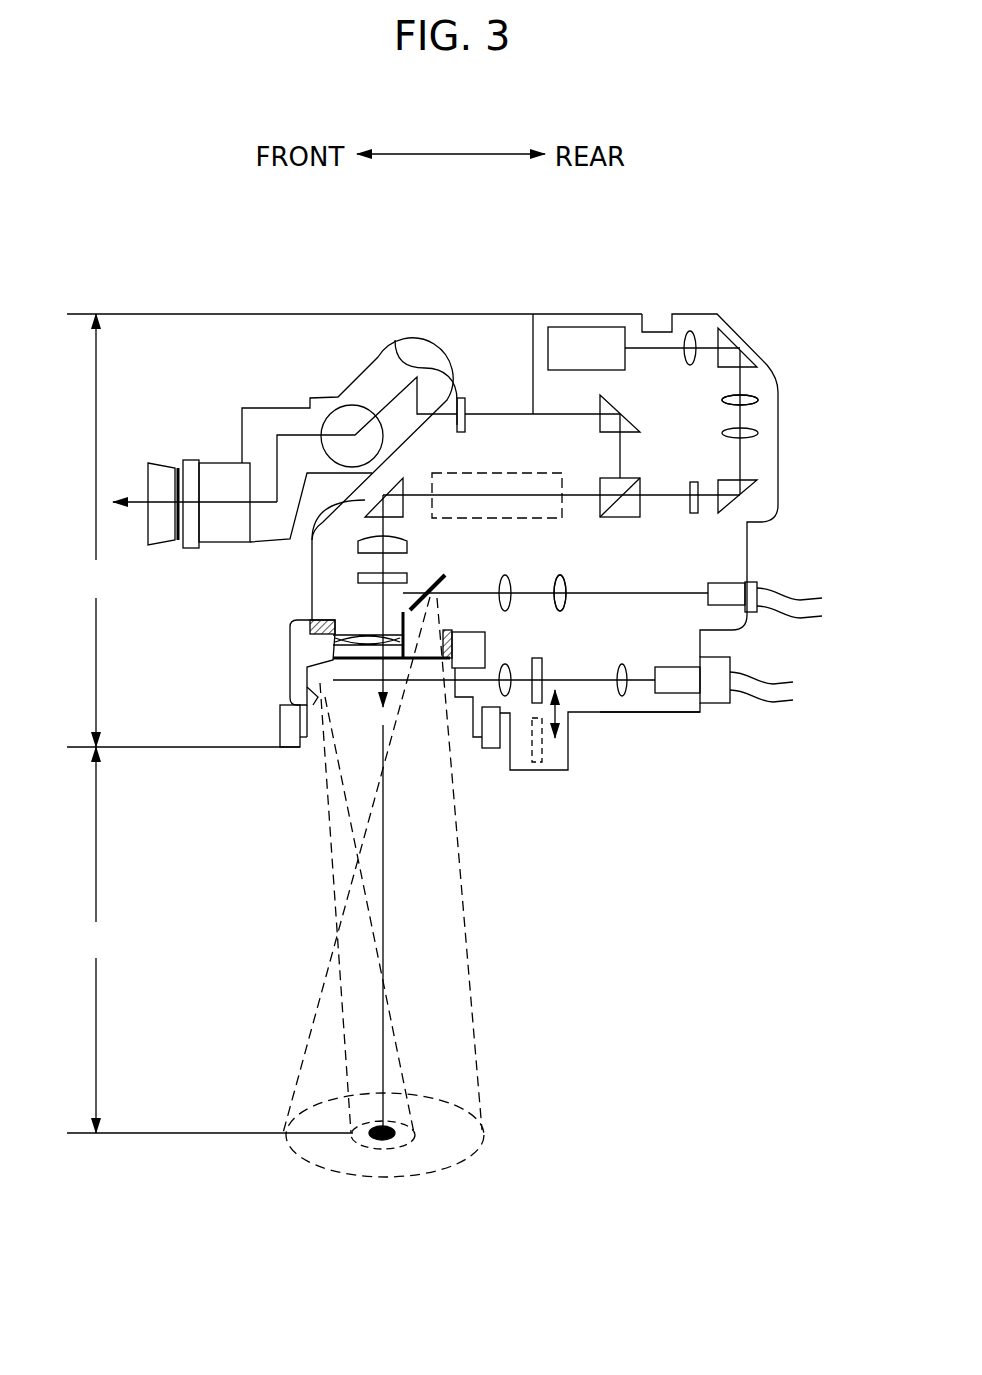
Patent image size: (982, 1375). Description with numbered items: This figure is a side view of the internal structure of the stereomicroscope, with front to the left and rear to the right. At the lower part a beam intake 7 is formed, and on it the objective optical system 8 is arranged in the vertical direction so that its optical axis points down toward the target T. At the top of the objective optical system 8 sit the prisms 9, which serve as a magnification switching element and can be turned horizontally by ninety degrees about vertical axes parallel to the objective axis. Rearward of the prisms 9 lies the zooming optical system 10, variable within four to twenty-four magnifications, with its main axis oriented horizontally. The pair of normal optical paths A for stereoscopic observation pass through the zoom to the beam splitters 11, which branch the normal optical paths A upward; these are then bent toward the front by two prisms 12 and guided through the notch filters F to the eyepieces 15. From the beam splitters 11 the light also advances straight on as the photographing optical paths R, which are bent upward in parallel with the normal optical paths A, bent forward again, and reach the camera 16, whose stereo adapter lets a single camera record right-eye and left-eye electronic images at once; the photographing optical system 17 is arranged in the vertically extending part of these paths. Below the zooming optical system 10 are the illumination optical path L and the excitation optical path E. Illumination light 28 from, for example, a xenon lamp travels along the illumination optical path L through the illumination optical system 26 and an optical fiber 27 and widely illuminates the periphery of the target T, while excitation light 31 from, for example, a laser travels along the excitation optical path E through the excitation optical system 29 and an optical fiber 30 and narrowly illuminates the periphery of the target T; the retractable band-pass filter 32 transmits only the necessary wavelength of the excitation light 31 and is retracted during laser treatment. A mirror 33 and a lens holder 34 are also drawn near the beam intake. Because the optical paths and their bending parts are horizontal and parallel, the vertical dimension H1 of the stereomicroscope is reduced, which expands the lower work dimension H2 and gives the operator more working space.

The beam intake 7 is at (356, 660).
The objective optical system 8 is at (358, 632).
The prisms 9 is at (358, 545).
The zooming optical system 10 is at (548, 472).
The beam splitters 11 is at (628, 479).
The prisms 12 is at (612, 401).
The eyepieces 15 is at (210, 460).
The camera 16 is at (595, 327).
The photographing optical system 17 is at (790, 522).
The illumination optical system 26 is at (470, 562).
The optical fiber 27 is at (777, 584).
The illumination light 28 is at (462, 918).
The excitation optical system 29 is at (497, 647).
The optical fiber 30 is at (756, 677).
The excitation light 31 is at (335, 888).
The band-pass filter 32 is at (545, 673).
The mirror 33 is at (433, 578).
The lens holder 34 is at (293, 703).
The normal optical paths A is at (533, 378).
The notch filters F is at (395, 338).
The photographing optical paths R is at (737, 413).
The illumination optical path L is at (628, 562).
The excitation optical path E is at (645, 713).
The target T is at (392, 1140).
The vertical dimension H1 is at (354, 530).
The lower work dimension H2 is at (210, 940).